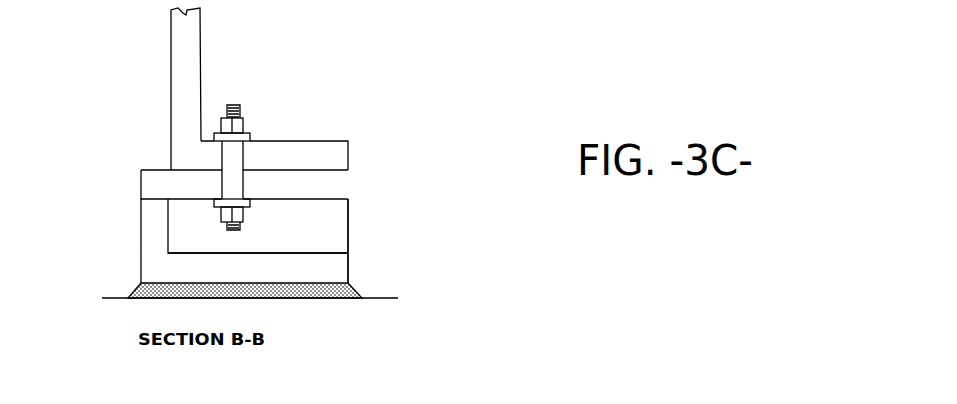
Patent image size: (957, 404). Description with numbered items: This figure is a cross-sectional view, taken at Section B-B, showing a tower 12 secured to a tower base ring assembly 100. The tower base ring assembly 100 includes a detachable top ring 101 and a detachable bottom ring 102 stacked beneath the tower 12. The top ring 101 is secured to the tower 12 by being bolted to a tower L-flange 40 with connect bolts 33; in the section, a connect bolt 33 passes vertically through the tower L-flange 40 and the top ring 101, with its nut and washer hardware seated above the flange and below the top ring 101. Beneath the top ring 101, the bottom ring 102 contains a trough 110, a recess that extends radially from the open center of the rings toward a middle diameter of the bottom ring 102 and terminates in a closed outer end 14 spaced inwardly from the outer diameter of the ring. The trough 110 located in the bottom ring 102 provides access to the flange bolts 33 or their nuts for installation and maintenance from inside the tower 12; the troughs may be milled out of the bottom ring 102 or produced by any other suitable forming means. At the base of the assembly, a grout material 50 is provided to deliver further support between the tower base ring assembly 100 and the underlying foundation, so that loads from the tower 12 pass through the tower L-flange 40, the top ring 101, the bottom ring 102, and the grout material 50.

The tower 12 is at (183, 59).
The connect bolt 33 is at (238, 162).
The tower L-flange 40 is at (337, 152).
The detachable top ring 101 is at (162, 189).
The detachable bottom ring 102 is at (152, 253).
The trough 110 is at (338, 228).
The grout material 50 is at (142, 290).
The closed outer end 14 is at (145, 285).
The tower base ring assembly 100 is at (392, 228).